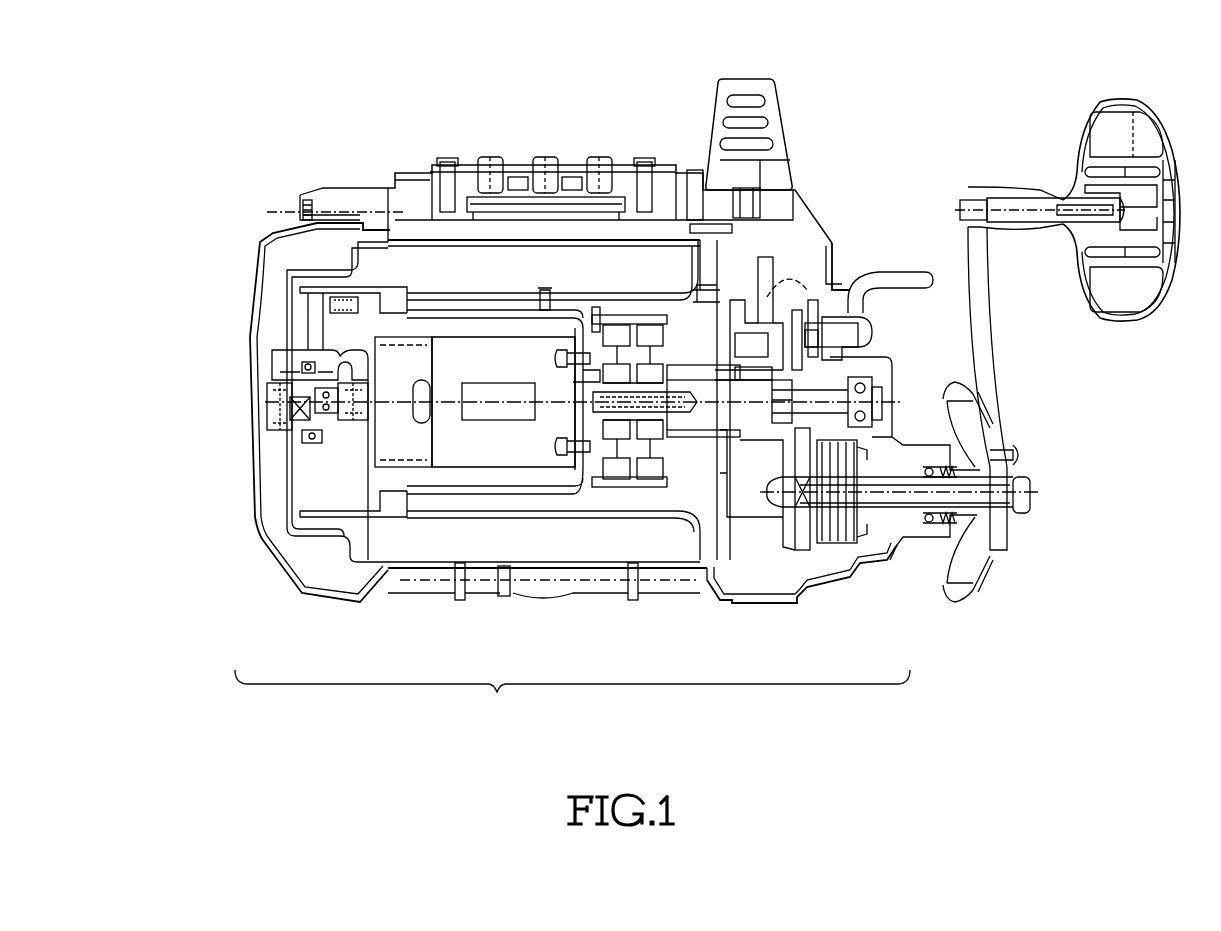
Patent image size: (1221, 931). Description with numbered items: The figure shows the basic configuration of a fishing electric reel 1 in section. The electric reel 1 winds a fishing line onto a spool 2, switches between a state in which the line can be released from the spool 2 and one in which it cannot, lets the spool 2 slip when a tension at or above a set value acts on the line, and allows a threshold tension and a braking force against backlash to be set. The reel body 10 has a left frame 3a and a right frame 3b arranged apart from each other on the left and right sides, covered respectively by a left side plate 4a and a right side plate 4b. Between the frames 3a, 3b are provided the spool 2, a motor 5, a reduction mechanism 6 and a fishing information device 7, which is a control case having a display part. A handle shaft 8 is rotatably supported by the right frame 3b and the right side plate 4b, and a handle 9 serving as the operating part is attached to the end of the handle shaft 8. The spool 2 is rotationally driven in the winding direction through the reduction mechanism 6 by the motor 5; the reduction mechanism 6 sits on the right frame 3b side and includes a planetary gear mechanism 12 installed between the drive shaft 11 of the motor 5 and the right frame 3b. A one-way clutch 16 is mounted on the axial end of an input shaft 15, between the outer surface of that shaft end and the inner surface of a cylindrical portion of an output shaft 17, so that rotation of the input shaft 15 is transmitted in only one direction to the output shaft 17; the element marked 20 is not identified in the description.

The electric reel 1 is at (236, 65).
The spool 2 is at (433, 505).
The left frame 3a is at (302, 605).
The left side plate 4a is at (353, 402).
The right frame 3b is at (807, 605).
The right side plate 4b is at (793, 489).
The motor 5 is at (500, 455).
The reduction mechanism 6 is at (770, 308).
The planetary gear mechanism 12 is at (657, 348).
The fishing information device 7 is at (448, 148).
The handle shaft 8 is at (933, 489).
The handle 9 is at (1037, 275).
The reel body 10 is at (572, 696).
The drive shaft 11 is at (355, 413).
The input shaft 15 is at (290, 410).
The one-way clutch 16 is at (323, 417).
The output shaft 17 is at (300, 421).
The rotation sensor 20 is at (330, 417).